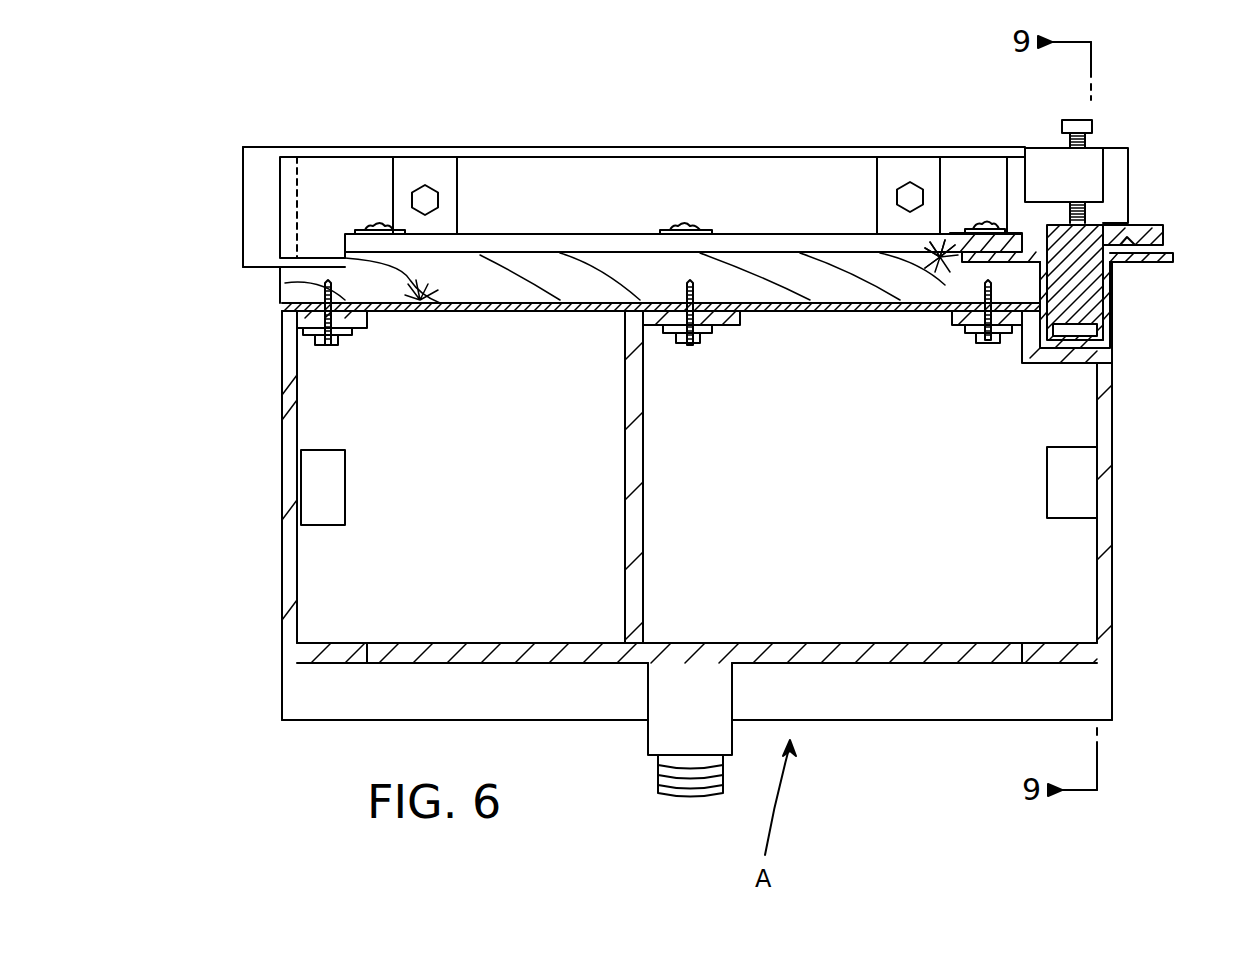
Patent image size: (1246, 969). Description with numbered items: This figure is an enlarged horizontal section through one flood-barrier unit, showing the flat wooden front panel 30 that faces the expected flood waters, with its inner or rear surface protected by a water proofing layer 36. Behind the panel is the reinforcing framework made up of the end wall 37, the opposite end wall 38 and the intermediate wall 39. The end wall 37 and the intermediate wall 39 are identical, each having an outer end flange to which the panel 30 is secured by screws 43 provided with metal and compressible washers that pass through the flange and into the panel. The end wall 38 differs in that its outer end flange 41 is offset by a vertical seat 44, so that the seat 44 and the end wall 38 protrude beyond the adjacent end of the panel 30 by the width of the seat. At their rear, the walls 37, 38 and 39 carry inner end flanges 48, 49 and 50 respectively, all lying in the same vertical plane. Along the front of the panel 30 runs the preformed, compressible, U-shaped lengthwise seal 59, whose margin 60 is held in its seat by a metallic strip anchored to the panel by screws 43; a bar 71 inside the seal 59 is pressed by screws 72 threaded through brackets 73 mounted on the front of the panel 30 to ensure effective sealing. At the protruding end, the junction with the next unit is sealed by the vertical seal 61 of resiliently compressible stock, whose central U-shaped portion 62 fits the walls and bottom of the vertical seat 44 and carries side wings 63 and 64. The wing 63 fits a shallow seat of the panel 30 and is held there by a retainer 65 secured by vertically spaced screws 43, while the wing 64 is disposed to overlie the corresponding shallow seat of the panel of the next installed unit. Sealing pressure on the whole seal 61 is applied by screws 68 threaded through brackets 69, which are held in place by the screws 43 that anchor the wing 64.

The front panel 30 is at (432, 303).
The water proofing layer 36 is at (522, 311).
The end wall 37 is at (290, 580).
The end wall 38 is at (1112, 530).
The intermediate wall 39 is at (645, 419).
The outer end flange 41 is at (957, 322).
The screws 43 is at (693, 228).
The vertical seat 44 is at (1040, 358).
The inner end flange 48 is at (345, 655).
The inner end flange 49 is at (1068, 652).
The inner end flange 50 is at (682, 650).
The U-shaped seal 59 is at (528, 150).
The margin of seal 60 is at (258, 208).
The vertical seal 61 is at (1115, 318).
The U-shaped portion 62 is at (1095, 392).
The wing 63 is at (937, 262).
The wing 64 is at (1165, 258).
The retainer 65 is at (983, 229).
The screws 68 is at (1077, 127).
The brackets 69 is at (1085, 175).
The bar 71 is at (640, 172).
The screws 72 is at (913, 196).
The brackets 73 is at (886, 160).